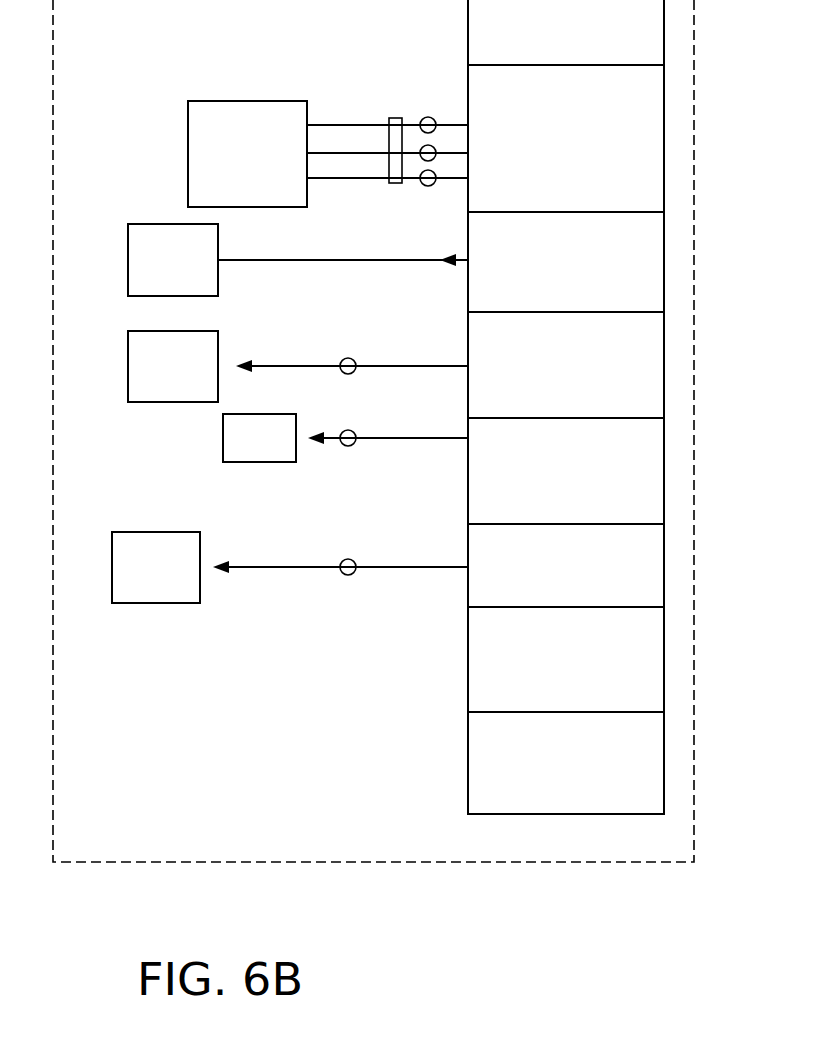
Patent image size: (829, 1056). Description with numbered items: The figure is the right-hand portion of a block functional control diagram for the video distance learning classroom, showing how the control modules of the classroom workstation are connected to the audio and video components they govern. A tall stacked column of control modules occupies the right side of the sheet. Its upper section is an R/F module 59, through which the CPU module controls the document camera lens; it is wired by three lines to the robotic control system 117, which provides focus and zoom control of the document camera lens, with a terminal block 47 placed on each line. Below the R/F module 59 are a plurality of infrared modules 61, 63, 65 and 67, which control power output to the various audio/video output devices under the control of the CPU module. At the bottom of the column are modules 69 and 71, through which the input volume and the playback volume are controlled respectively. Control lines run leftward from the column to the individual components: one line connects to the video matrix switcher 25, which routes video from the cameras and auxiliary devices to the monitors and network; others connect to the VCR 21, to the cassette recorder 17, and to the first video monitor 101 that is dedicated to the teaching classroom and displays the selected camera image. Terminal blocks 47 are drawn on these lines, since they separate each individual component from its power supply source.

The robotic control system 117 is at (198, 118).
The video matrix switcher 25 is at (141, 249).
The VCR 21 is at (141, 349).
The cassette recorder 17 is at (236, 430).
The first video monitor 101 is at (125, 550).
The terminal blocks 47 is at (428, 117).
The R/F module 59 is at (474, 82).
The infrared module 61 is at (480, 267).
The infrared module 63 is at (480, 377).
The infrared module 65 is at (480, 457).
The infrared module 67 is at (480, 577).
The input volume module 69 is at (480, 661).
The playback volume module 71 is at (480, 729).